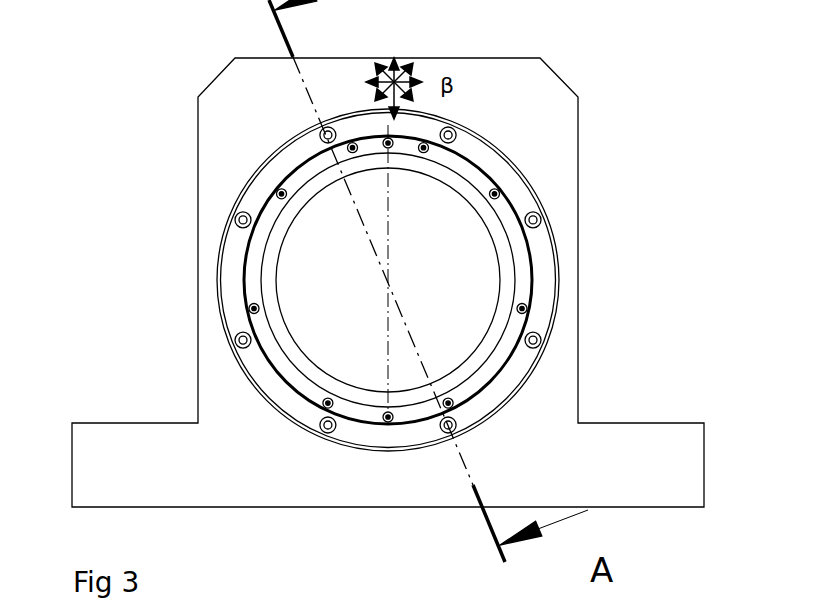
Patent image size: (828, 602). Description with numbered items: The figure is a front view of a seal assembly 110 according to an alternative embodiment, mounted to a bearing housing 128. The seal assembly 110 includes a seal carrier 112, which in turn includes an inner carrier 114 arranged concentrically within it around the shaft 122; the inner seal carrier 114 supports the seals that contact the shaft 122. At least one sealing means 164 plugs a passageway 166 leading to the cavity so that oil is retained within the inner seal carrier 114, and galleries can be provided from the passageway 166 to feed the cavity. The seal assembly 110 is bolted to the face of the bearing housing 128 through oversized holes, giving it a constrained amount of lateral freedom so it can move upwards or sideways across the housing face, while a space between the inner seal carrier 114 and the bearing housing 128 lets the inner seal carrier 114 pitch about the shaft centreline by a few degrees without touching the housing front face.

The seal assembly 110 is at (535, 193).
The seal carrier 112 is at (552, 235).
The inner carrier 114 is at (527, 285).
The shaft 122 is at (503, 292).
The bearing housing 128 is at (560, 385).
The sealing means 164 is at (348, 149).
The passageway 166 is at (350, 152).